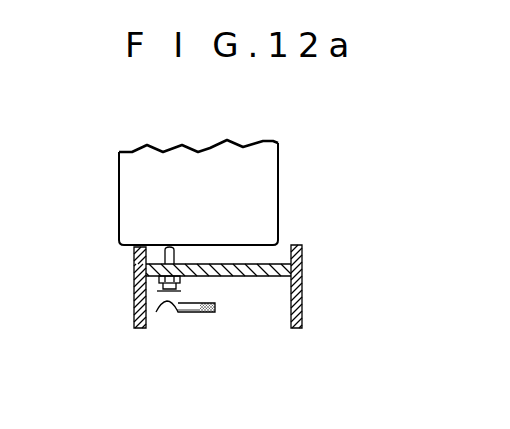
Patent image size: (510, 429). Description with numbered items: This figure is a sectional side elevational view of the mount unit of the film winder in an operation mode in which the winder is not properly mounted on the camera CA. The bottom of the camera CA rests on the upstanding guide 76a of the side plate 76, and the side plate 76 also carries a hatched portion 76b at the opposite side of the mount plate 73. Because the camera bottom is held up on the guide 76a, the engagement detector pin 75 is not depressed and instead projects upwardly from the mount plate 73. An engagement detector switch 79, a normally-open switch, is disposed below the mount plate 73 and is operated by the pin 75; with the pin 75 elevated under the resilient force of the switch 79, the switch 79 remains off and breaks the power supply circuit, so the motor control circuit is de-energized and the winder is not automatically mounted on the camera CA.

The camera CA is at (276, 183).
The mount plate 73 is at (268, 268).
The engagement detector pin 75 is at (167, 257).
The side plate 76 is at (139, 300).
The upstanding guide 76a is at (139, 251).
The upper portion of right leg 76b is at (300, 252).
The engagement detector switch 79 is at (187, 314).